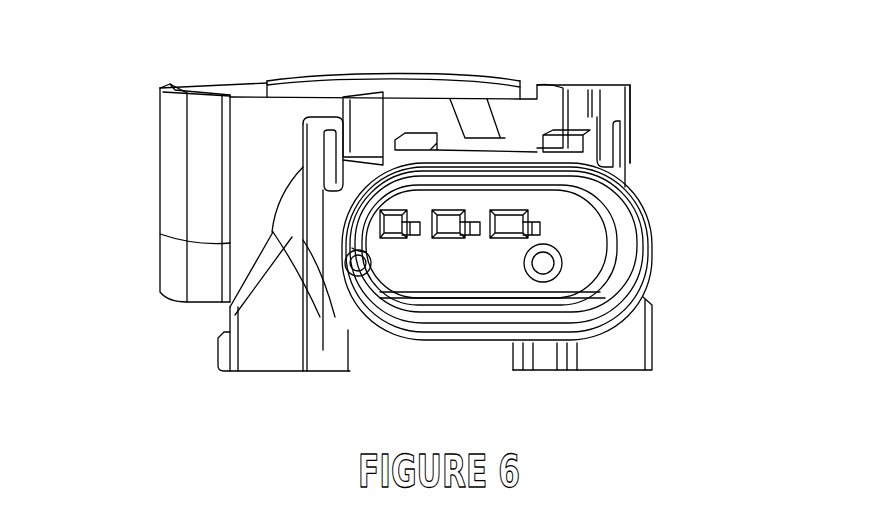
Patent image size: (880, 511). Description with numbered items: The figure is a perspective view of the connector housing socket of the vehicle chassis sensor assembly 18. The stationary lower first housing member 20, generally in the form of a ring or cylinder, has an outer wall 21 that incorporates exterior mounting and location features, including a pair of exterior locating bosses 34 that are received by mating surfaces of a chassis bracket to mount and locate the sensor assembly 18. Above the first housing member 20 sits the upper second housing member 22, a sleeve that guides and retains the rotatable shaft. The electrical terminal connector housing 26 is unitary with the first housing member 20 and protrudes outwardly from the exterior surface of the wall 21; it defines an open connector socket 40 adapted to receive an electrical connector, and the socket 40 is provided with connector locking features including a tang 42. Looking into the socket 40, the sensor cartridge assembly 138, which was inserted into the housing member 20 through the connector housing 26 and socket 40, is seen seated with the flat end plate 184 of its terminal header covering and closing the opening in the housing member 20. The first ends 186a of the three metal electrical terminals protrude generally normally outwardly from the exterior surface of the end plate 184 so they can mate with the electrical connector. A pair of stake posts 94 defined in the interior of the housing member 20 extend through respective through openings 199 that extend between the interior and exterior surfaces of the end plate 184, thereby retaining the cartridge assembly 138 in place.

The sensor assembly 18 is at (688, 140).
The first housing member 20 is at (147, 258).
The outer wall 21 is at (236, 265).
The second housing member 22 is at (152, 141).
The electrical terminal connector housing 26 is at (650, 199).
The locating bosses 34 is at (247, 328).
The connector socket 40 is at (607, 250).
The tang 42 is at (473, 105).
The stake posts 94 is at (366, 277).
The sensor cartridge assembly 138 is at (396, 274).
The end plate 184 is at (407, 238).
The first ends of the terminals 186a is at (513, 238).
The through openings 199 is at (352, 240).